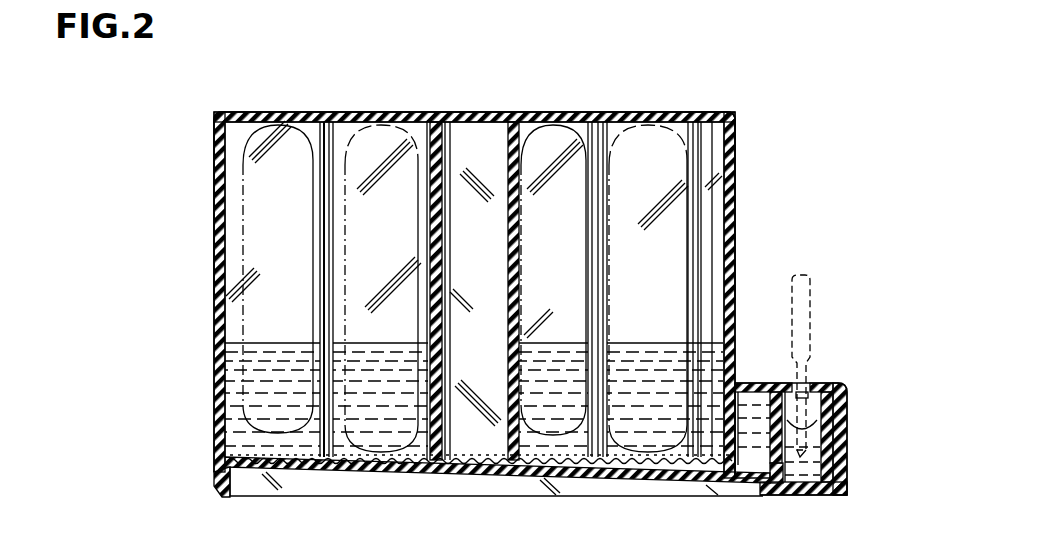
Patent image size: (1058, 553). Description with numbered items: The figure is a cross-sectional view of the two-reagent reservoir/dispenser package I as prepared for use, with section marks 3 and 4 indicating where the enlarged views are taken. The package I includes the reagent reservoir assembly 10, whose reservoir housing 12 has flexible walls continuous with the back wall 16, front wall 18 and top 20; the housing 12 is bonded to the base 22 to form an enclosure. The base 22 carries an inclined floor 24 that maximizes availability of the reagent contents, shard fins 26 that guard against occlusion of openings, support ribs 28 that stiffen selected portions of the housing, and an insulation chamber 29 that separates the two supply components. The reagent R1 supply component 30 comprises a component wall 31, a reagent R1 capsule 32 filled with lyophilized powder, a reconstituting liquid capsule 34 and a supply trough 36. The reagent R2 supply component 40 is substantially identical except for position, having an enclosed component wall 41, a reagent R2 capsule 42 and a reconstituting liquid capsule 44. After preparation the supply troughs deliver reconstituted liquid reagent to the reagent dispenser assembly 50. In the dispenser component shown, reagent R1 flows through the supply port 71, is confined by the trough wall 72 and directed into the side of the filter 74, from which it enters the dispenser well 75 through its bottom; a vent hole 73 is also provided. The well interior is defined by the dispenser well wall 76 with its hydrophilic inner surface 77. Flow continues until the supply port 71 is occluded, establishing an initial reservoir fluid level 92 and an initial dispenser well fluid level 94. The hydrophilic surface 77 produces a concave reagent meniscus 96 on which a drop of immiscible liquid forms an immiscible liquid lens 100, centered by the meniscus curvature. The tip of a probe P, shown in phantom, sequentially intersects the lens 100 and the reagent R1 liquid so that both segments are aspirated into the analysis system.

The reagent reservoir assembly 10 is at (240, 76).
The reservoir housing 12 is at (216, 118).
The back wall 16 is at (215, 192).
The front wall 18 is at (733, 182).
The top 20 is at (712, 112).
The base 22 is at (215, 482).
The inclined floor 24 is at (624, 472).
The shard fins 26 is at (588, 478).
The support ribs 28 is at (322, 185).
The insulation chamber 29 is at (488, 167).
The reagent R1 supply component 30 is at (609, 130).
The component wall 31 is at (495, 118).
The reagent R1 capsule 32 is at (565, 130).
The reconstituting liquid capsule 34 is at (673, 120).
The supply trough 36 is at (752, 480).
The reagent R2 supply component 40 is at (320, 121).
The enclosed component wall 41 is at (443, 117).
The reagent R2 capsule 42 is at (262, 116).
The reconstituting liquid capsule 44 is at (408, 98).
The reagent dispenser assembly 50 is at (864, 342).
The supply port 71 is at (731, 446).
The trough wall 72 is at (765, 487).
The vent hole 73 is at (745, 382).
The filter 74 is at (825, 495).
The dispenser well 75 is at (836, 383).
The dispenser well wall 76 is at (847, 415).
The hydrophilic inner surface 77 is at (837, 452).
The initial reservoir fluid level 92 is at (259, 341).
The initial dispenser well fluid level 94 is at (782, 412).
The concave reagent meniscus 96 is at (808, 382).
The immiscible liquid lens 100 is at (847, 428).
The probe P is at (812, 300).
The reagent R1 is at (625, 355).
The reagent R2 is at (392, 355).
The section line 3 is at (830, 335).
The section line 4 is at (178, 147).
The two-reagent reservoir/dispenser package I is at (724, 66).